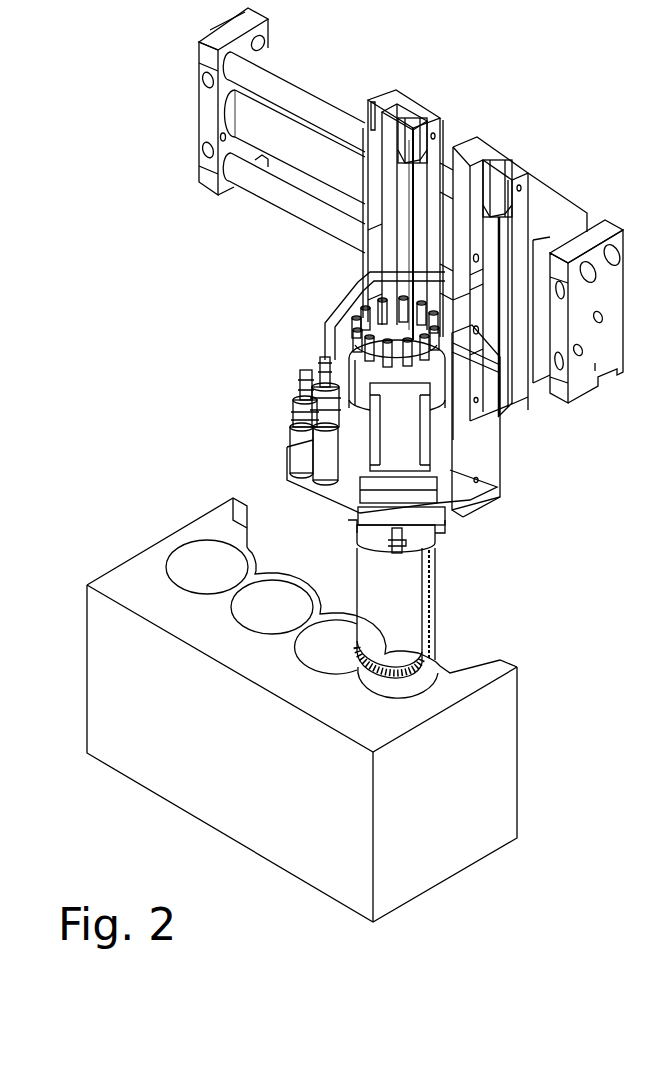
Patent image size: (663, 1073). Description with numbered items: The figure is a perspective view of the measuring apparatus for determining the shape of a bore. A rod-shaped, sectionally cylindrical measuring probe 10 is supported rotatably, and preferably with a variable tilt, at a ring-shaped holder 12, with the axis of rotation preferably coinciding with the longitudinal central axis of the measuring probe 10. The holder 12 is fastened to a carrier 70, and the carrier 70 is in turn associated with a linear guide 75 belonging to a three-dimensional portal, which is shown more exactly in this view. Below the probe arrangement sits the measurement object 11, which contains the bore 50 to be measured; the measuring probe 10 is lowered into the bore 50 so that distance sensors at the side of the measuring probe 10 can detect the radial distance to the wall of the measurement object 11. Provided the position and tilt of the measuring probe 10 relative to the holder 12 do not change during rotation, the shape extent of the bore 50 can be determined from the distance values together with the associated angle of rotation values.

The measuring probe 10 is at (460, 599).
The measurement object 11 is at (264, 695).
The holder 12 is at (276, 414).
The bore 50 is at (194, 558).
The carrier 70 is at (547, 207).
The linear guide 75 is at (315, 74).